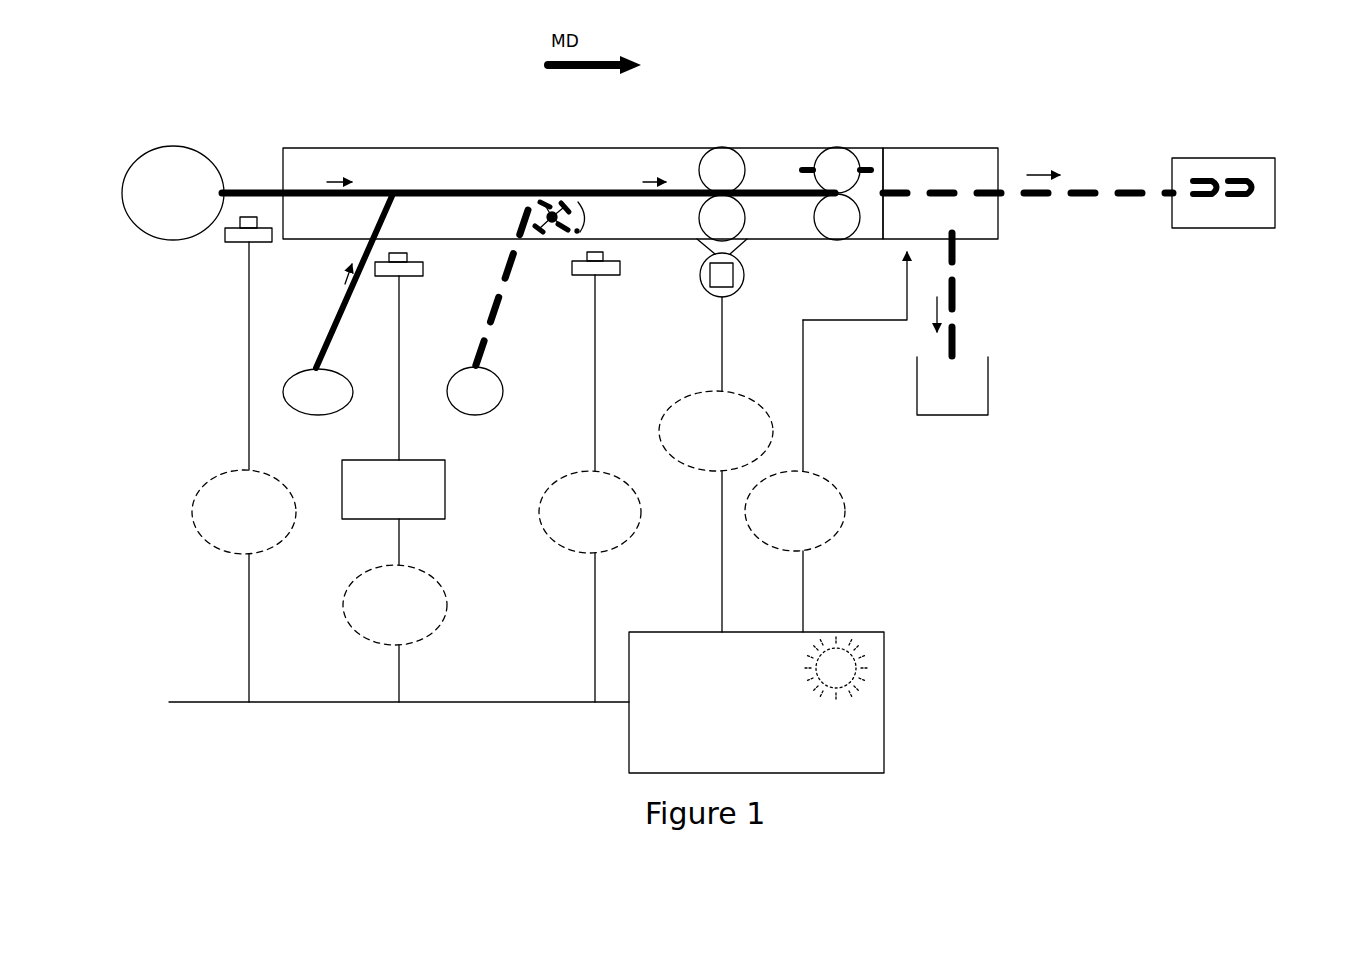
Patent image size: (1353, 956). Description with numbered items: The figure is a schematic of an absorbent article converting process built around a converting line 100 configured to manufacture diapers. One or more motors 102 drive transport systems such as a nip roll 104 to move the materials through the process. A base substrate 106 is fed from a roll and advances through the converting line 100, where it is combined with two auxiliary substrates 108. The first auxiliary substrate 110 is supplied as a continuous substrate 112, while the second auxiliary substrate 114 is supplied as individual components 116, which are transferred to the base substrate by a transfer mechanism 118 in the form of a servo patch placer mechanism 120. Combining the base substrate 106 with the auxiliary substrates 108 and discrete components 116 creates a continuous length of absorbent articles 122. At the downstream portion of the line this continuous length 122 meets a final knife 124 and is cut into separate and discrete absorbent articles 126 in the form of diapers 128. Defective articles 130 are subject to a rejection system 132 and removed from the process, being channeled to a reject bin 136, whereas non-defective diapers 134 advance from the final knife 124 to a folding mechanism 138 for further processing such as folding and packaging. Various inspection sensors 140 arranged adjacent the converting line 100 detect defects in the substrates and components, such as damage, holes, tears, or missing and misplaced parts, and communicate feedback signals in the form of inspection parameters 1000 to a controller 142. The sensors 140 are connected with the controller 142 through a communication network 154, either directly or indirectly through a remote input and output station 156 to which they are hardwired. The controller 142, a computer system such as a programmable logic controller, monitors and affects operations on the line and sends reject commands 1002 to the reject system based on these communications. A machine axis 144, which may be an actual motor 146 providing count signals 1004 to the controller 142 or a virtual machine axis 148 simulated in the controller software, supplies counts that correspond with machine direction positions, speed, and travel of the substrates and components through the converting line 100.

The converting line 100 is at (410, 160).
The motor 102 is at (713, 299).
The nip roll 104 is at (726, 165).
The base substrate 106 is at (262, 188).
The auxiliary substrates 108 is at (386, 410).
The first auxiliary substrate 110 is at (310, 402).
The continuous substrate 112 is at (333, 328).
The second auxiliary substrate 114 is at (467, 403).
The individual components 116 is at (492, 323).
The transfer mechanism 118 is at (550, 260).
The servo patch placer mechanism 120 is at (535, 240).
The continuous length of absorbent articles 122 is at (777, 188).
The final knife 124 is at (841, 158).
The discrete absorbent articles 126 is at (951, 133).
The diapers 128 is at (896, 187).
The defective articles 130 is at (955, 297).
The rejection system 132 is at (987, 227).
The non-defective diapers 134 is at (1087, 188).
The reject bin 136 is at (988, 395).
The folding mechanism 138 is at (1197, 217).
The inspection sensors 140 is at (236, 236).
The controller 142 is at (866, 748).
The machine axis 144 is at (867, 481).
The actual motor 146 is at (733, 275).
The virtual machine axis 148 is at (840, 667).
The communication network 154 is at (247, 358).
The remote input and output station 156 is at (430, 488).
The inspection parameters 1000 is at (212, 545).
The reject commands 1002 is at (845, 496).
The count signals 1004 is at (687, 392).